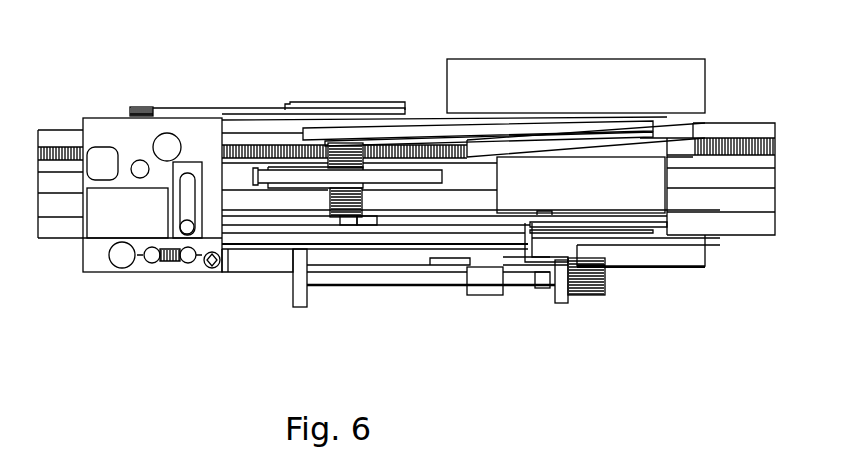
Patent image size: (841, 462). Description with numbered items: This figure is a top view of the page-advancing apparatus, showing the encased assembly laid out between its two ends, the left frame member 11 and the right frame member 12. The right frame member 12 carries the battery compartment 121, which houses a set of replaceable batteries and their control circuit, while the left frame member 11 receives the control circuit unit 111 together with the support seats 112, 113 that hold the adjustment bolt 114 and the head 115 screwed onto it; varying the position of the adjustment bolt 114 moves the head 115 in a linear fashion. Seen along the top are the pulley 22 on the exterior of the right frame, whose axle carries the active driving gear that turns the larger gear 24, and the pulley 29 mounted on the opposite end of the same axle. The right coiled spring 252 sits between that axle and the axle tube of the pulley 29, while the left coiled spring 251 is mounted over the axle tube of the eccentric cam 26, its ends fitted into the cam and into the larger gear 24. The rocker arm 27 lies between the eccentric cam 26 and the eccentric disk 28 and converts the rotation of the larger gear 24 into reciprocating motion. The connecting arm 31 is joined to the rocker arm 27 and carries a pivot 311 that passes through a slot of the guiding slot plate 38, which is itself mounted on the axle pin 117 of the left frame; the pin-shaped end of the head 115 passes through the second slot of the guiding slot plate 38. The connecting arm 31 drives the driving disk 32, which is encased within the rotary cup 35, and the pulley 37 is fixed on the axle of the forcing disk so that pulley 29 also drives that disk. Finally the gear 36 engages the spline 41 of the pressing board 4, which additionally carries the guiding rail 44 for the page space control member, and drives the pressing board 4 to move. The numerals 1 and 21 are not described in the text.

The knob 1 is at (145, 106).
The rail 21 is at (203, 107).
The right frame member 12 is at (263, 118).
The pulley 22 is at (365, 102).
The pulley 29 is at (410, 108).
The right coiled spring 252 is at (437, 112).
The battery compartment 121 is at (600, 58).
The pulley 37 is at (653, 133).
The gear 36 is at (680, 145).
The pressing board 4 is at (747, 123).
The spline 41 is at (715, 155).
The guiding rail 44 is at (737, 205).
The rotary cup 35 is at (665, 193).
The pivot 311 is at (545, 212).
The larger gear 24 is at (423, 180).
The left coiled spring 251 is at (330, 193).
The eccentric cam 26 is at (378, 218).
The eccentric disk 28 is at (367, 218).
The rocker arm 27 is at (383, 217).
The control circuit unit 111 is at (107, 274).
The support seat 112 is at (293, 302).
The adjustment bolt 114 is at (343, 287).
The head 115 is at (483, 298).
The axle pin 117 is at (540, 290).
The guiding slot plate 38 is at (528, 272).
The support seat 113 is at (568, 298).
The connecting arm 31 is at (613, 233).
The driving disk 32 is at (660, 227).
The left frame member 11 is at (683, 247).